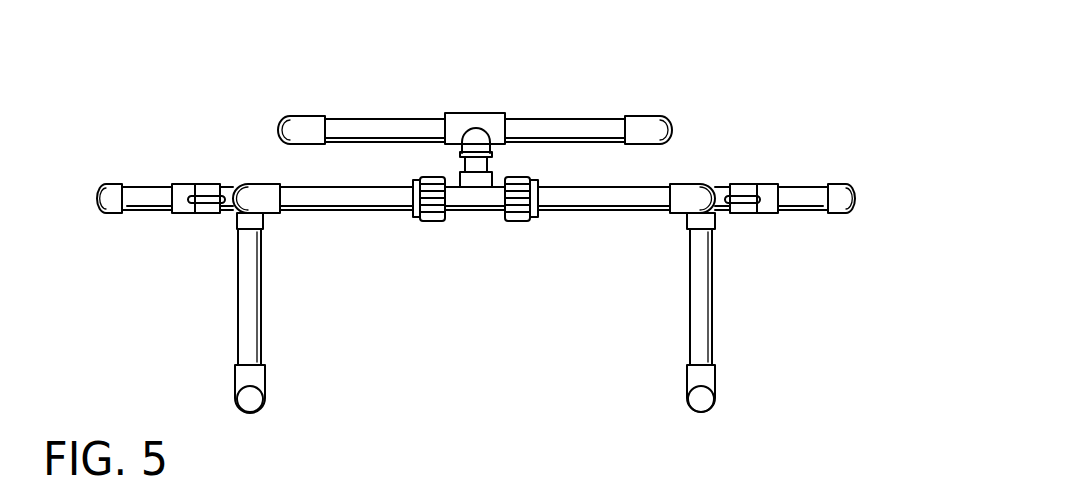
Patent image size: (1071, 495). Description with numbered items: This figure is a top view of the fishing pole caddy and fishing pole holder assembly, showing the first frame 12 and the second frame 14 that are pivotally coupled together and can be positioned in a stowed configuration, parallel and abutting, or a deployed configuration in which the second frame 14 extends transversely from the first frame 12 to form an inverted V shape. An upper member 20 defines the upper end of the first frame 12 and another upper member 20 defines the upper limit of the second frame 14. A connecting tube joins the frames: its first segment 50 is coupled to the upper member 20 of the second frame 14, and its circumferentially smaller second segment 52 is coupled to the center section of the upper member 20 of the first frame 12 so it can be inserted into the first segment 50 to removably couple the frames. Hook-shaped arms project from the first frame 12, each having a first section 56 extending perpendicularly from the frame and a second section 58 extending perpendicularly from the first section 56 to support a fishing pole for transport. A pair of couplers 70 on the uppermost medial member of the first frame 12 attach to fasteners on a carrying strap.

The first frame 12 is at (608, 195).
The second frame 14 is at (567, 122).
The upper member 20 is at (362, 127).
The first segment 50 is at (477, 133).
The second segment 52 is at (472, 168).
The first section 56 is at (248, 312).
The second section 58 is at (250, 399).
The coupler 70 is at (216, 200).